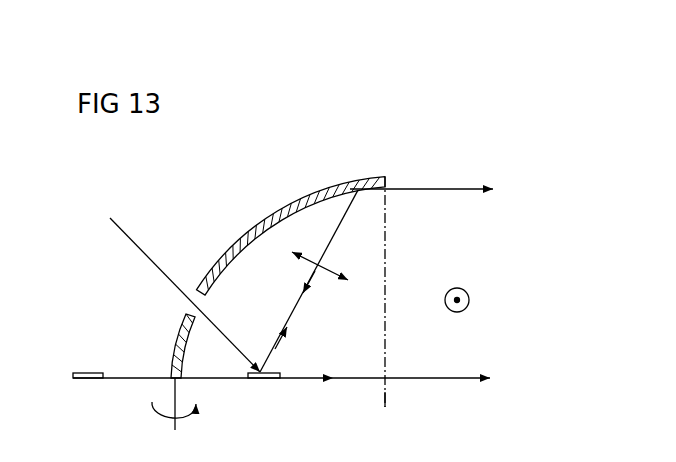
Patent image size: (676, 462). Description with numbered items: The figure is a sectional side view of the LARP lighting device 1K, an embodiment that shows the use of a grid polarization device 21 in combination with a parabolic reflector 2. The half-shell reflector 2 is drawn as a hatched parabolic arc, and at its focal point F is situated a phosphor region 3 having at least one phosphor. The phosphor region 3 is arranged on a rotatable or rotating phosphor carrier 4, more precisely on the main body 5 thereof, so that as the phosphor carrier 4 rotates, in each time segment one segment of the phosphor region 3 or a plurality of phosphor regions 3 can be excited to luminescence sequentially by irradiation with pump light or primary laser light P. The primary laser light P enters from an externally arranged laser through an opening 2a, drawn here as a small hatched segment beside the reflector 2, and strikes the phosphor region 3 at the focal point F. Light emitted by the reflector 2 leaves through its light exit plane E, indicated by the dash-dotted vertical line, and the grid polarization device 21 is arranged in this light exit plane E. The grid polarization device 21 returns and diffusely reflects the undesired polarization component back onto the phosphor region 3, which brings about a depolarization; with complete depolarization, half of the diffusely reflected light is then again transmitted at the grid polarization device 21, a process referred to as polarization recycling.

The lighting device 1K is at (460, 150).
The half-shell reflector 2 is at (312, 193).
The openings 2a is at (188, 309).
The phosphor region 3 is at (88, 372).
The phosphor carrier 4 is at (127, 400).
The main body 5 is at (230, 379).
The grid polarization device 21 is at (387, 397).
The light exit plane E is at (388, 270).
The focal point F is at (265, 355).
The primary laser light P is at (142, 250).